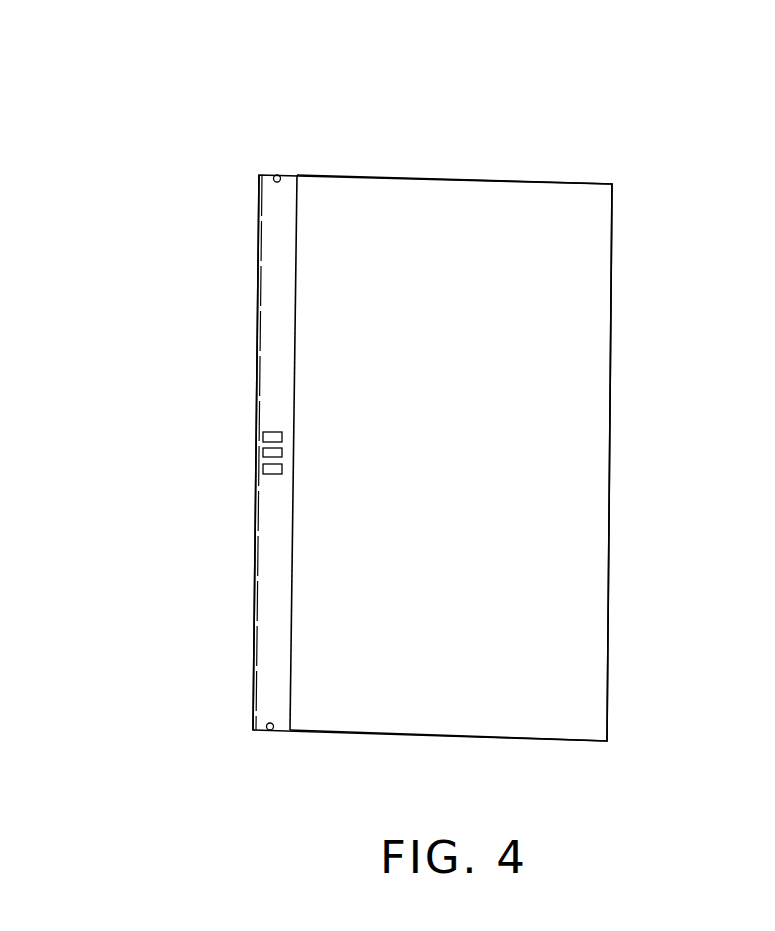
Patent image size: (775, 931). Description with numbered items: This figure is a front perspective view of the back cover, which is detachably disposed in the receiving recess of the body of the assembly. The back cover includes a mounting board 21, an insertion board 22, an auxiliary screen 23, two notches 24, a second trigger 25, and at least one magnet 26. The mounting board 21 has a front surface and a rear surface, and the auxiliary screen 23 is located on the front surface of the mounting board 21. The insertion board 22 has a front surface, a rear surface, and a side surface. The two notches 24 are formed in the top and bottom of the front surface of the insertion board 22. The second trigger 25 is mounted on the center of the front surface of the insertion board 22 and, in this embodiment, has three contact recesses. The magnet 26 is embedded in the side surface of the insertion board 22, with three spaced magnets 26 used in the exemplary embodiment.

The mounting board 21 is at (458, 178).
The insertion board 22 is at (275, 260).
The auxiliary screen 23 is at (550, 353).
The notches 24 is at (279, 176).
The second trigger 25 is at (275, 451).
The magnet 26 is at (257, 462).